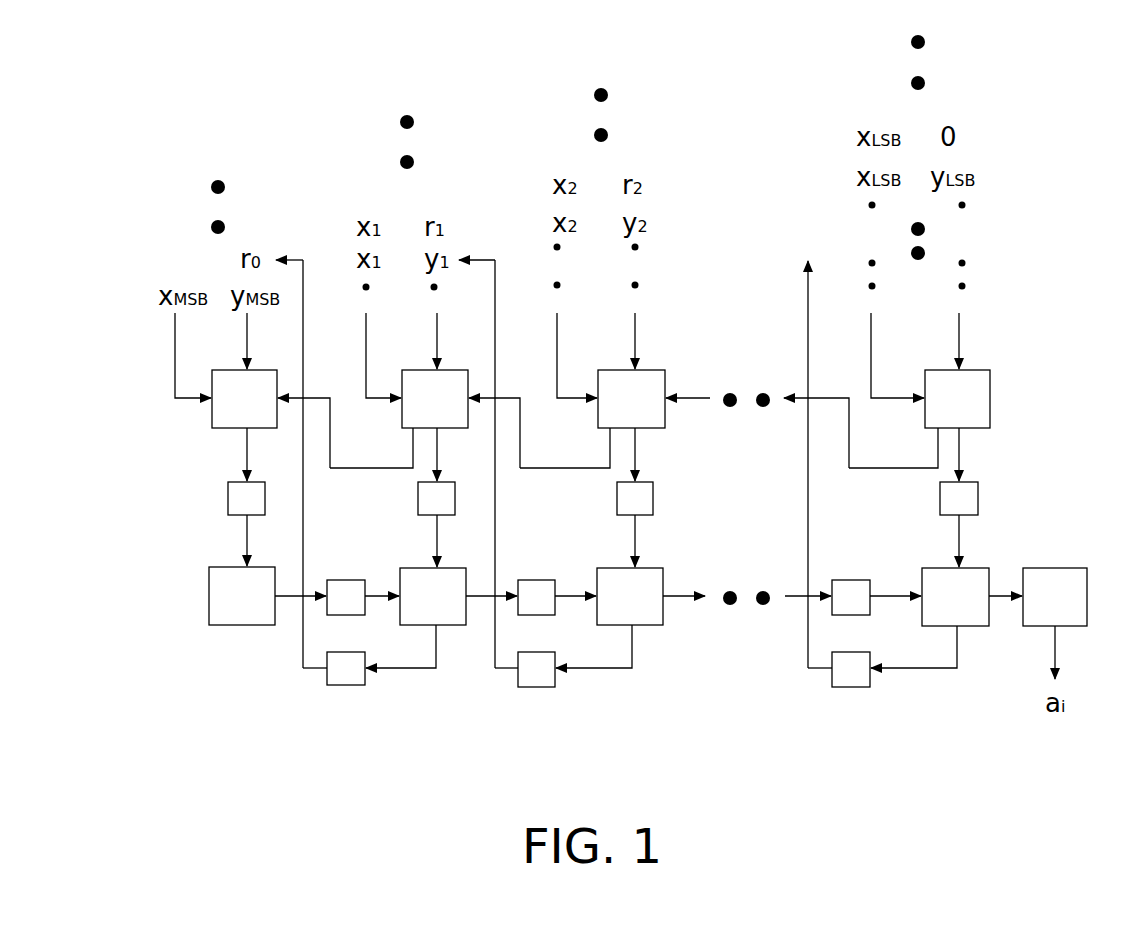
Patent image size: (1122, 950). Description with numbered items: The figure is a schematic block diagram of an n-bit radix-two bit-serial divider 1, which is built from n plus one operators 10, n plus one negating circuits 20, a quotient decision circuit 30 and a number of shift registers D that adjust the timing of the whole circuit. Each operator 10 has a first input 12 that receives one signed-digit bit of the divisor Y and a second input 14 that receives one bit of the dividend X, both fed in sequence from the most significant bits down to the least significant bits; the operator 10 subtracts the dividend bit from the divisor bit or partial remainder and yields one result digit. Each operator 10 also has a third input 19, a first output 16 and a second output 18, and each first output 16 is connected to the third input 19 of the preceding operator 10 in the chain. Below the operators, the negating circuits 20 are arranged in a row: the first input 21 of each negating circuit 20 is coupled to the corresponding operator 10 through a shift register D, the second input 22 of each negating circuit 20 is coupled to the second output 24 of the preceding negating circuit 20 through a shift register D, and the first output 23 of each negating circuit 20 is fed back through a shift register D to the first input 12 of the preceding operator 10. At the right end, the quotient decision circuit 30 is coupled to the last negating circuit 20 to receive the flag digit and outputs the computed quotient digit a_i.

The bit-serial divider 1 is at (153, 360).
The operator 10 is at (212, 425).
The first input 12 is at (247, 342).
The second input 14 is at (185, 405).
The first output 16 is at (368, 469).
The second output 18 is at (247, 455).
The third input 19 is at (323, 398).
The negating circuit 20 is at (243, 626).
The first input 21 is at (247, 542).
The second input 22 is at (370, 596).
The first output 23 is at (436, 652).
The second output 24 is at (295, 598).
The quotient decision circuit 30 is at (970, 627).